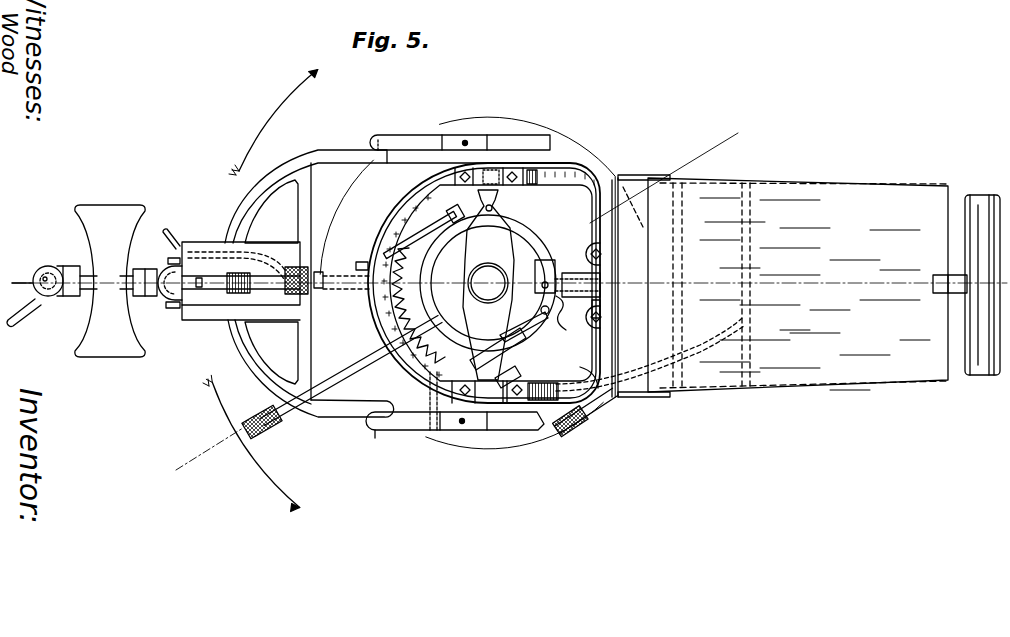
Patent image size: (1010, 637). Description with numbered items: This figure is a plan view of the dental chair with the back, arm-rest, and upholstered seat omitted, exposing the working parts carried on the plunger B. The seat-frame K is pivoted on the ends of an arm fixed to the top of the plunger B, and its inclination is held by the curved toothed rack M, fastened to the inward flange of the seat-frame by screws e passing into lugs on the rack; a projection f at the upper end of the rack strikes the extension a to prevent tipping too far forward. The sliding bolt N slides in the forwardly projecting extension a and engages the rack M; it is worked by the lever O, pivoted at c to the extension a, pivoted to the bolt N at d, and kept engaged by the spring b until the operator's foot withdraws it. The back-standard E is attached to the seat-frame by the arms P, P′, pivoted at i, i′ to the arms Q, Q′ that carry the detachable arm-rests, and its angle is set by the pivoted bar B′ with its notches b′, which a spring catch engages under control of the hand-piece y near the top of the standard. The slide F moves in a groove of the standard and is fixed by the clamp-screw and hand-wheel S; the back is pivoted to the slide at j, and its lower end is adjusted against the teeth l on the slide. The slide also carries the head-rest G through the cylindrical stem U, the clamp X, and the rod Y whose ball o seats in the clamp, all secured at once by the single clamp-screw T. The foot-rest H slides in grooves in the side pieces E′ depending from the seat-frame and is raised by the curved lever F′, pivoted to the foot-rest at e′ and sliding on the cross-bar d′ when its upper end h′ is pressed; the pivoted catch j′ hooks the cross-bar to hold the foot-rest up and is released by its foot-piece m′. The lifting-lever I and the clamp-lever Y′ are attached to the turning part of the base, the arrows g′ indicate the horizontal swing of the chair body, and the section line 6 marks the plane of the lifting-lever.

The head-rest G is at (105, 212).
The clamp X is at (46, 266).
The ball o is at (43, 278).
The clamp-screw T is at (24, 322).
The rod Y is at (64, 294).
The cylindrical stem U is at (150, 272).
The hand-piece y is at (171, 236).
The back-standard E is at (215, 250).
The slide F is at (176, 309).
The pivot j is at (200, 290).
The teeth l is at (248, 272).
The arm P′ is at (312, 163).
The arm P is at (288, 371).
The arrows g′ is at (256, 291).
The section line 6 is at (455, 302).
The lifting-lever I is at (268, 434).
The pivoted bar B′ is at (330, 269).
The openings or notches b′ is at (345, 291).
The clamp-lever Y′ is at (362, 262).
The pivot i′ is at (375, 133).
The arm Q′ is at (426, 143).
The pivot i is at (372, 444).
The arm Q is at (527, 430).
The lever O is at (430, 400).
The plunger B is at (462, 242).
The spring b is at (418, 305).
The pivot d is at (490, 285).
The extension a is at (497, 279).
The sliding bolt N is at (453, 307).
The pivot c is at (547, 325).
The clamp-screw and hand-wheel S is at (537, 321).
The screws e is at (603, 252).
The curved toothed rack M is at (603, 287).
The seat-frame K is at (612, 308).
The side pieces E′ is at (646, 175).
The curved lever F′ is at (609, 402).
The upper end of lever h′ is at (578, 436).
The foot-piece m′ is at (650, 360).
The pivoted catch j′ is at (584, 370).
The projection f is at (503, 382).
The foot-rest H is at (798, 285).
The cross-bar d′ is at (686, 285).
The pivot e′ is at (756, 285).